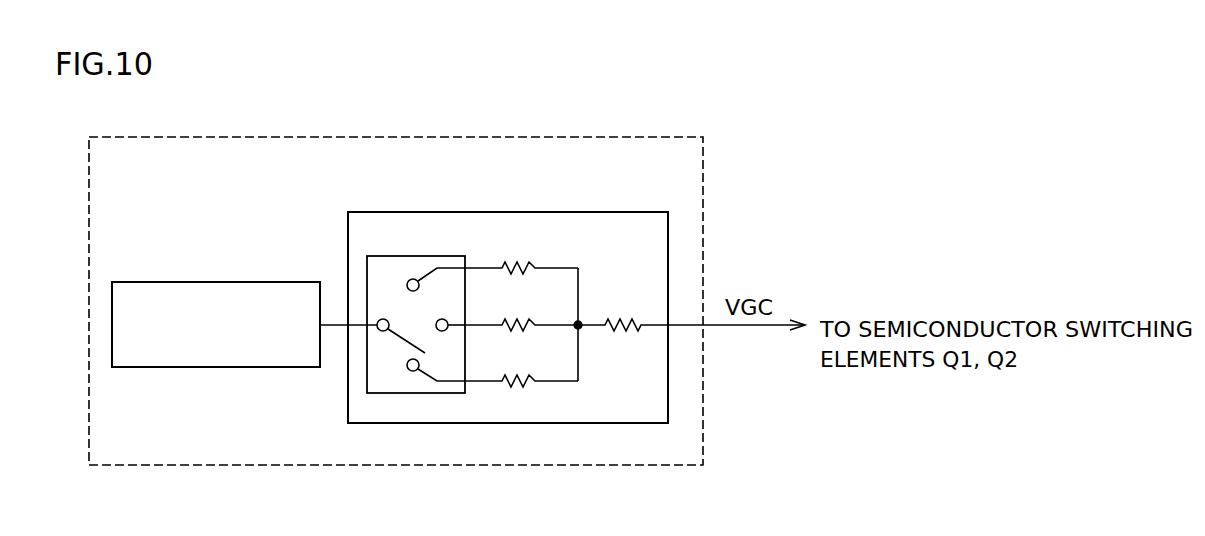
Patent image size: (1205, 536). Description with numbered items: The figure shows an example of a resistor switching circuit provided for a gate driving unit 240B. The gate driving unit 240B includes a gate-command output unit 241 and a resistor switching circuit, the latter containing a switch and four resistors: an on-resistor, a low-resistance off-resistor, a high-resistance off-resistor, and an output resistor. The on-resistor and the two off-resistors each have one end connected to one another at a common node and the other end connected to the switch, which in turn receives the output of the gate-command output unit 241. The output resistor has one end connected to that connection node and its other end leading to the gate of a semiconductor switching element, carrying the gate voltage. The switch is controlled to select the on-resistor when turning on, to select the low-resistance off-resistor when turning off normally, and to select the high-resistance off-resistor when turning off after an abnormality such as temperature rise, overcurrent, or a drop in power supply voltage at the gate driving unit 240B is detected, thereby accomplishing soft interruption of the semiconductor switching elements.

The gate driving unit 240B is at (620, 137).
The gate-command output unit 241 is at (255, 282).